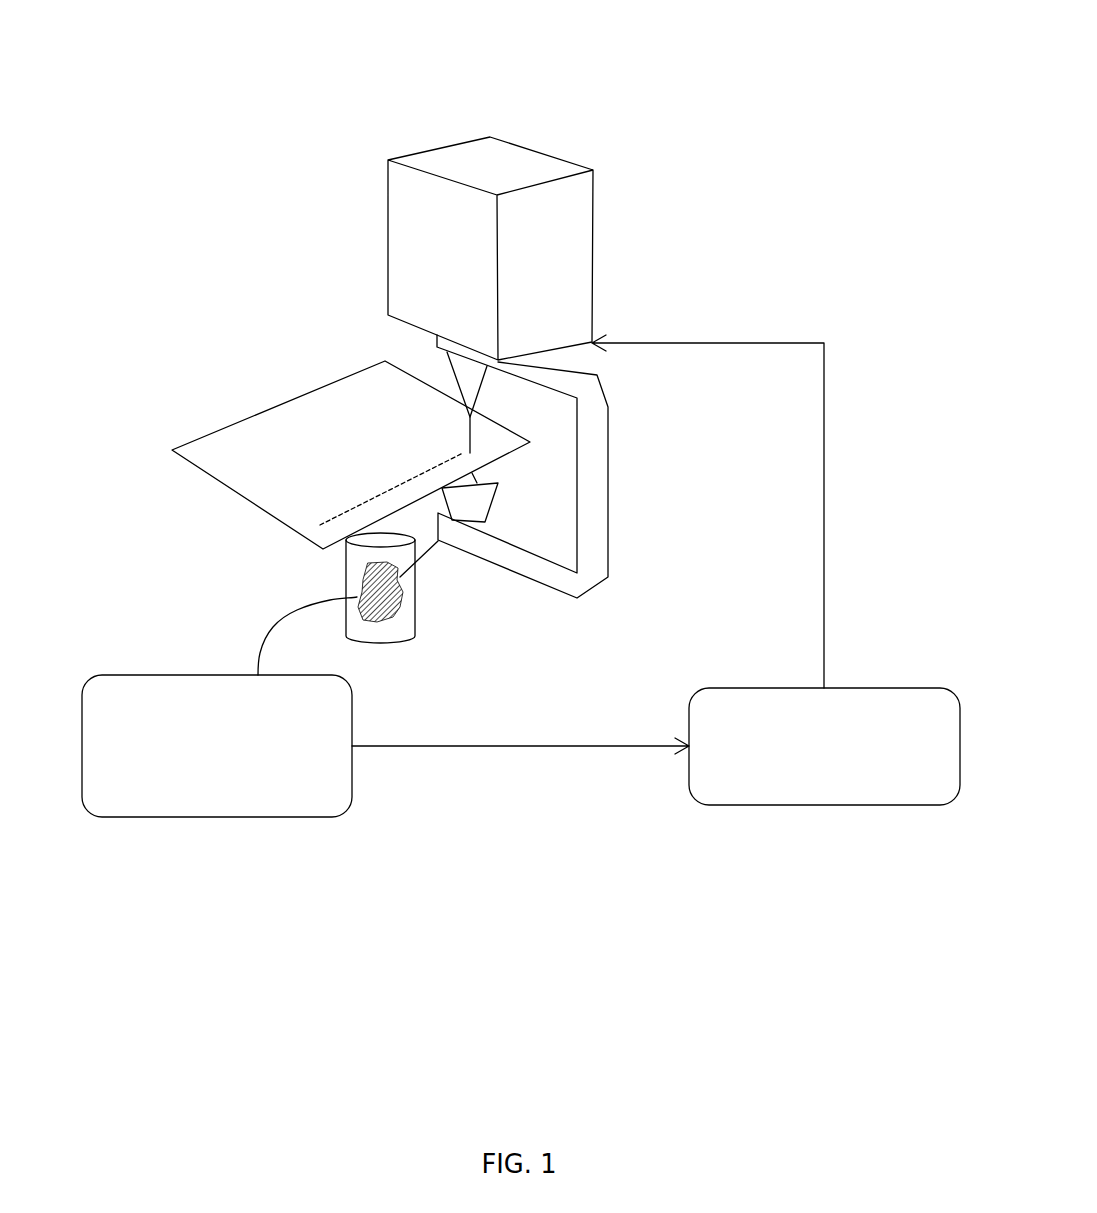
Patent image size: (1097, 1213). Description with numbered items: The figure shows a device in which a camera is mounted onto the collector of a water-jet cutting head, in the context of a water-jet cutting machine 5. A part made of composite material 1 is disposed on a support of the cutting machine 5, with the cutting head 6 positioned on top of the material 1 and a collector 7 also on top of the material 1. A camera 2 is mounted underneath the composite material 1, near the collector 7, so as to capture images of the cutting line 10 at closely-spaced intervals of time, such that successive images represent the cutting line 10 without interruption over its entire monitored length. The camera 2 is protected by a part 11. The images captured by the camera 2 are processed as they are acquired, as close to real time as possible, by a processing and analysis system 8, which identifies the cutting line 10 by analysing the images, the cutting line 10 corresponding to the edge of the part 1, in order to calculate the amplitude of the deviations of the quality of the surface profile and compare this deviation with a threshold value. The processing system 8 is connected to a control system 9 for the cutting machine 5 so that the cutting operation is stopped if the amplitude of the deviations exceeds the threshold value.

The part made of composite material 1 is at (225, 453).
The camera 2 is at (390, 615).
The water-jet cutting machine 5 is at (513, 175).
The cutting head 6 is at (467, 388).
The collector 7 is at (477, 502).
The processing and analysis system 8 is at (212, 775).
The control system 9 is at (815, 762).
The cutting line 10 is at (347, 508).
The part 11 is at (350, 575).